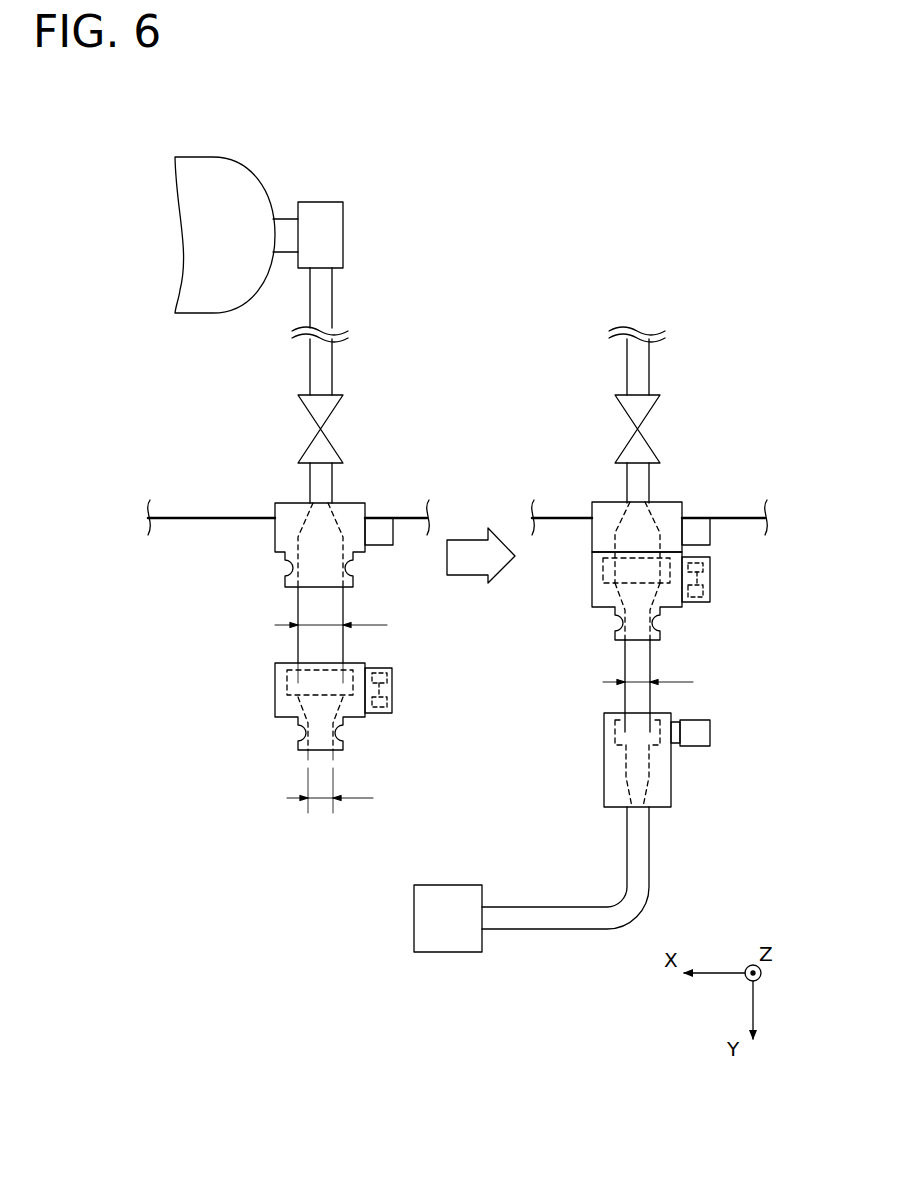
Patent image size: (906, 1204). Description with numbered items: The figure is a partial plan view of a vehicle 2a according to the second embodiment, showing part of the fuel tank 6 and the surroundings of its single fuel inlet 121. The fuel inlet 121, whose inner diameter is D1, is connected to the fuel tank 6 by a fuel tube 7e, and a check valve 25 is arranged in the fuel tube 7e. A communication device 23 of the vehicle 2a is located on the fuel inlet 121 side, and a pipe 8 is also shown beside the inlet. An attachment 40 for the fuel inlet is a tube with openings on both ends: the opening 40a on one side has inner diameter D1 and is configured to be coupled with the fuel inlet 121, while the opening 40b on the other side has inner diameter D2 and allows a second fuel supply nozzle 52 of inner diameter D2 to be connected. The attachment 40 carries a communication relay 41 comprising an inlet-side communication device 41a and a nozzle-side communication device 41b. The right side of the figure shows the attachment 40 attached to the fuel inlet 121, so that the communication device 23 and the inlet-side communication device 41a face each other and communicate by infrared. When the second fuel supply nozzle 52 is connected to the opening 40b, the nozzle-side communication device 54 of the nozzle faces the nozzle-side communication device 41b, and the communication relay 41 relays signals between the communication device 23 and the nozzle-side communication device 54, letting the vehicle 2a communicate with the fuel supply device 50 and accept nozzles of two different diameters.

The vehicle 2a is at (357, 108).
The fuel tank 6 is at (212, 313).
The fuel tube 7e is at (333, 370).
The check valve 25 is at (302, 448).
The fuel inlet 121 is at (275, 533).
The pipe 8 is at (186, 521).
The communication device 23 is at (380, 517).
The attachment 40 is at (275, 680).
The opening 40a is at (290, 658).
The opening 40b is at (304, 754).
The communication relay 41 is at (383, 713).
The inlet-side communication device 41a is at (392, 680).
The nozzle-side communication device 41b is at (392, 700).
The inner diameter D1 is at (336, 612).
The inner diameter D2 is at (492, 735).
The fuel supply device 50 is at (448, 883).
The second fuel supply nozzle 52 is at (604, 778).
The nozzle-side communication device 54 is at (710, 732).